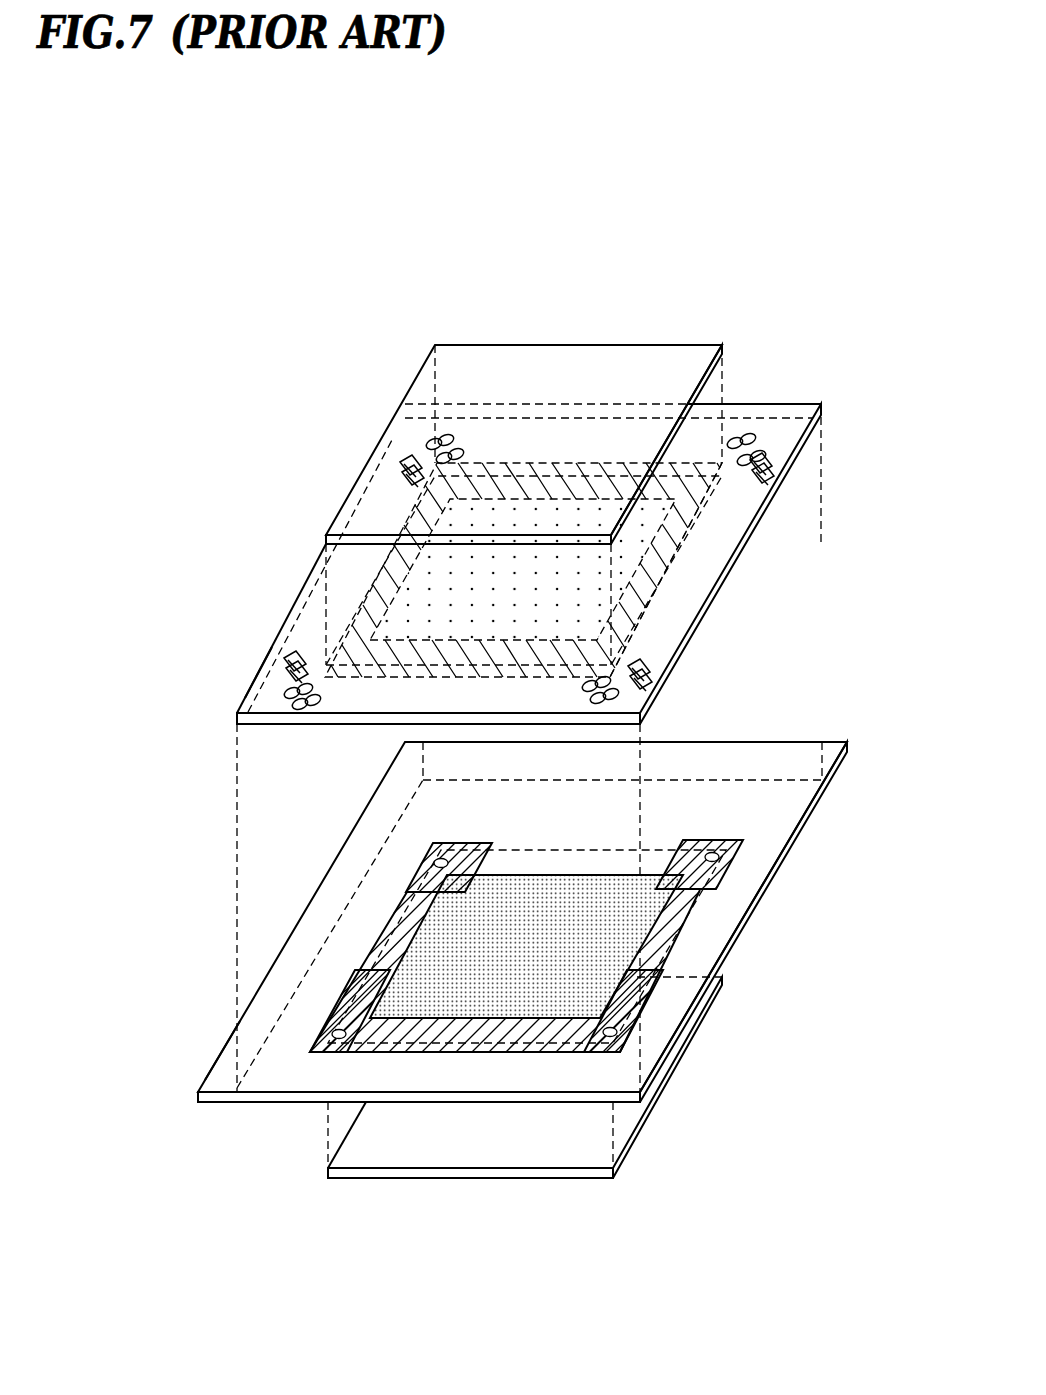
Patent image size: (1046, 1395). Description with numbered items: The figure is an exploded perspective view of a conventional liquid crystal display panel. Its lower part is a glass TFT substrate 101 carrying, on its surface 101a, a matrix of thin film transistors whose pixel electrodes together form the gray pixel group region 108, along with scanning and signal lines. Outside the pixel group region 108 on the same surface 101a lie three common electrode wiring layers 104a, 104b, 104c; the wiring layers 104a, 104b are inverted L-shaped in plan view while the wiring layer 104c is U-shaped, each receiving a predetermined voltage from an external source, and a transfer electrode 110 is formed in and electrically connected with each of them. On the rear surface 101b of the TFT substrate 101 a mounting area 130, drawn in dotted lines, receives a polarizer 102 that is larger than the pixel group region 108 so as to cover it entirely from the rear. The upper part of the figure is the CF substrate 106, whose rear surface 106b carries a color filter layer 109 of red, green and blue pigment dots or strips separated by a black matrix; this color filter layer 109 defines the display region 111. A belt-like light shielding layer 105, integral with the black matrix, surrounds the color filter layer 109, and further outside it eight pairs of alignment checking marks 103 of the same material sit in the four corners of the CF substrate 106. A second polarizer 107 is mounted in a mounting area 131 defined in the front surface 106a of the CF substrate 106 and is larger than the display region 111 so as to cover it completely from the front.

The TFT substrate 101 is at (755, 758).
The surface of TFT substrate 101a is at (228, 1079).
The rear surface of TFT substrate 101b is at (228, 1104).
The polarizer 102 is at (632, 1135).
The alignment checking marks 103 is at (765, 458).
The common electrode wiring layer 104a is at (458, 845).
The common electrode wiring layer 104b is at (725, 872).
The common electrode wiring layer 104c is at (645, 996).
The light shielding layer 105 is at (381, 505).
The CF substrate 106 is at (758, 410).
The front surface of CF substrate 106a is at (263, 698).
The rear surface of CF substrate 106b is at (268, 727).
The polarizer 107 is at (549, 357).
The pixel group region 108 is at (605, 939).
The color filter layer 109 is at (657, 522).
The transfer electrode 110 is at (719, 857).
The display region 111 is at (665, 557).
The mounting area 130 is at (695, 903).
The mounting area 131 is at (660, 617).